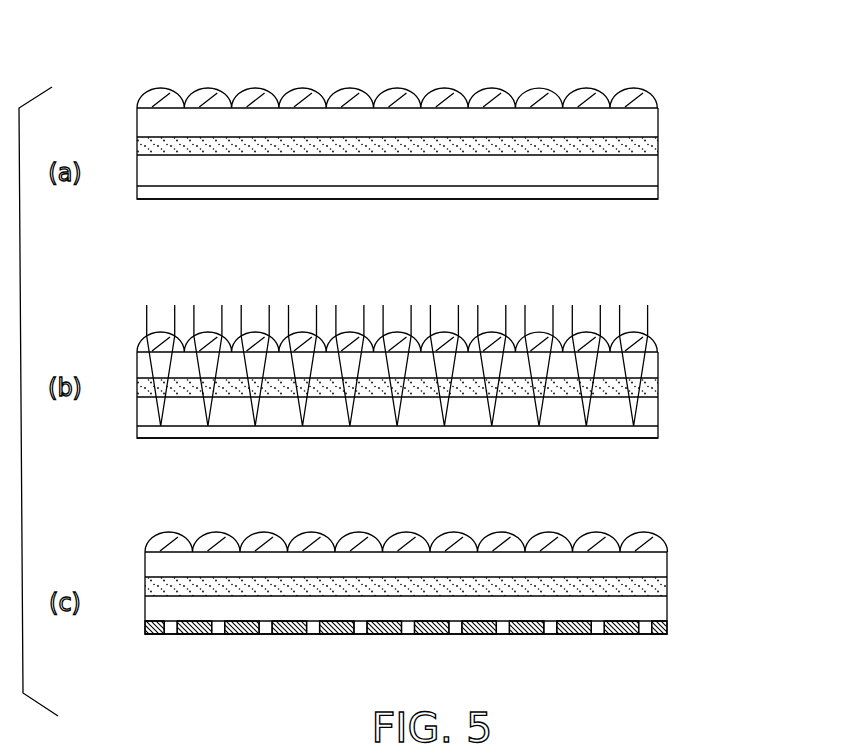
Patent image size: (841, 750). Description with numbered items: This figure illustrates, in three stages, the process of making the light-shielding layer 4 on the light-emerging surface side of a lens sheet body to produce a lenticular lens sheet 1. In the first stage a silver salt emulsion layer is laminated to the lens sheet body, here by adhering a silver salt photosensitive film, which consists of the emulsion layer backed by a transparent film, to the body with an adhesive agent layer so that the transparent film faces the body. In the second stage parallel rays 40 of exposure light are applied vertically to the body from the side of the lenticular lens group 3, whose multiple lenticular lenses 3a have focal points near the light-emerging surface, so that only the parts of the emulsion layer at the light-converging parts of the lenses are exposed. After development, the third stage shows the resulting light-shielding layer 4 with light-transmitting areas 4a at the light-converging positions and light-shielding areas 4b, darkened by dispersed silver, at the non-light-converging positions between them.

The lenticular lens sheet 1 is at (477, 578).
The lenticular lens group 3 is at (397, 304).
The lenticular lens 3a is at (206, 340).
The light-shielding layer 4 is at (434, 654).
The light-transmitting area 4a is at (310, 638).
The light-shielding area 4b is at (195, 638).
The parallel rays 40 is at (459, 320).